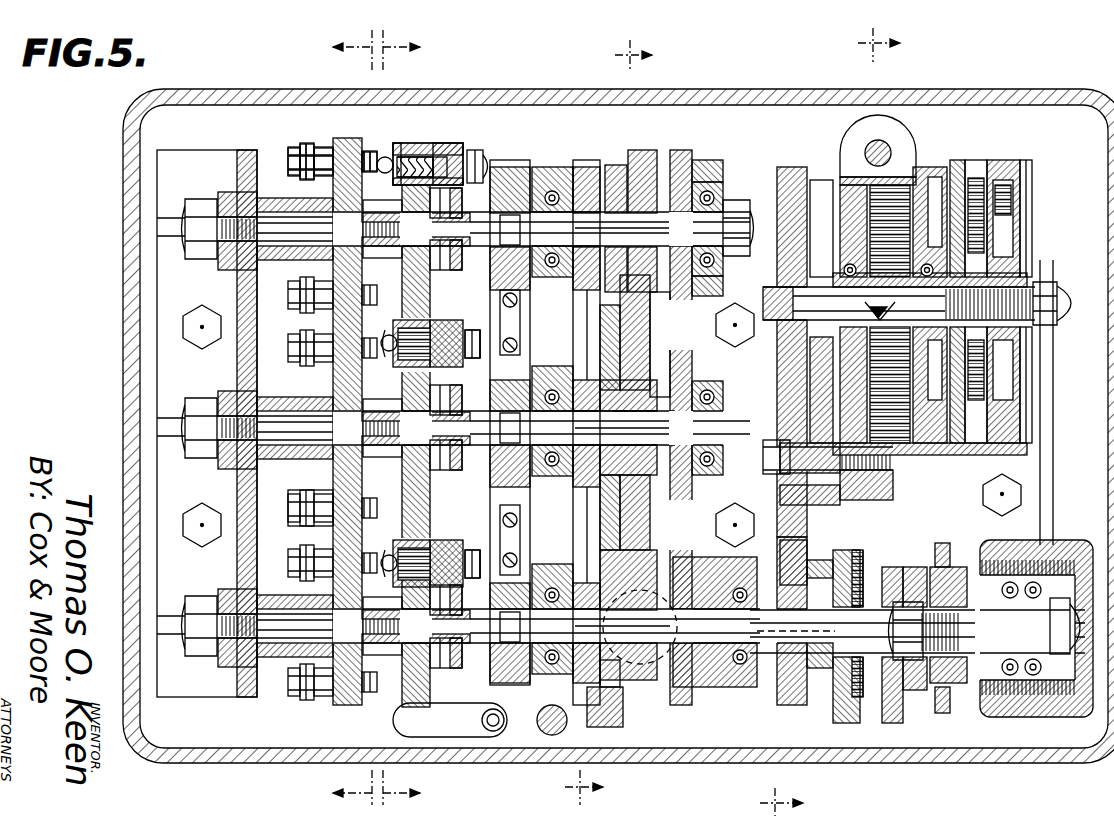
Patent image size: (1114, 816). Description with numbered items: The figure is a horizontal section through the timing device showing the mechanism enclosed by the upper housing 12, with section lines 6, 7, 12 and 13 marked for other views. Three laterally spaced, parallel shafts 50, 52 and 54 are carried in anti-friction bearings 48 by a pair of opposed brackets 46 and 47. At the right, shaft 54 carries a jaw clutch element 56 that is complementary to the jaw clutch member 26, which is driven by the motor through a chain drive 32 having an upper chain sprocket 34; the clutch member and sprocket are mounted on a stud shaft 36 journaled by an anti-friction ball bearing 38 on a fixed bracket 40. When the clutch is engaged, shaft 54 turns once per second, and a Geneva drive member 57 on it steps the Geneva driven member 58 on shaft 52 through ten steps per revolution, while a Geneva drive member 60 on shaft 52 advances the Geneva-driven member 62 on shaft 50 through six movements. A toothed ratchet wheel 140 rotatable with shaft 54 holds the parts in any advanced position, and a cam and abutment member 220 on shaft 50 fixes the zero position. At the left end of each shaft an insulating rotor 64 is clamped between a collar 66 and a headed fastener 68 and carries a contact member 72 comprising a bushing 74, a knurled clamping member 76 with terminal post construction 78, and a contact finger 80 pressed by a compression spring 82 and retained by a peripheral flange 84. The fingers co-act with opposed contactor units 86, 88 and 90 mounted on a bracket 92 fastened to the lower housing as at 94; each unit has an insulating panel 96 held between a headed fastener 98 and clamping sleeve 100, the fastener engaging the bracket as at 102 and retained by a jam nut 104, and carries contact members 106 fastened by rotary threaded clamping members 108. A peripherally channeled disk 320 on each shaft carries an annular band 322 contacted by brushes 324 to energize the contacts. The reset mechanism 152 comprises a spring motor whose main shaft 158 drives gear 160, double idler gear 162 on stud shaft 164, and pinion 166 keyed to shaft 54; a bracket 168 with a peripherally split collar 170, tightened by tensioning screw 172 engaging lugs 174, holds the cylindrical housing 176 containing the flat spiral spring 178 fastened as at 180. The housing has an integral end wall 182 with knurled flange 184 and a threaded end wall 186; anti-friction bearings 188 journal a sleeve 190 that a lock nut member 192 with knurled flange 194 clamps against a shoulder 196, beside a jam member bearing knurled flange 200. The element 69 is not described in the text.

The section line 6- 6 is at (603, 428).
The section line 7- 7 is at (819, 422).
The upper housing 12 is at (401, 423).
The section line 13- 13 is at (352, 423).
The jaw clutch member 26 is at (897, 525).
The chain drive 32 is at (870, 560).
The upper chain sprocket 34 is at (915, 585).
The stud shaft 36 is at (955, 690).
The anti-friction ball bearing 38 is at (1045, 540).
The bracket 40 is at (1052, 452).
The bracket 46 is at (700, 160).
The bracket 47 is at (585, 160).
The anti-friction bearings 48 is at (710, 182).
The shaft 50 is at (628, 212).
The shaft 52 is at (655, 425).
The shaft 54 is at (686, 688).
The jaw clutch element 56 is at (843, 728).
The Geneva drive member 57 is at (595, 720).
The Geneva driven member 58 is at (615, 505).
The Geneva drive member 60 is at (650, 552).
The Geneva-driven member 62 is at (645, 152).
The insulating rotor 64 is at (430, 690).
The collar 66 is at (455, 255).
The headed fastener 68 is at (360, 250).
The shaft shoulder 69 is at (375, 262).
The contact member 72 is at (470, 143).
The bushing 74 is at (410, 145).
The knurled clamping member 76 is at (470, 148).
The terminal post construction 78 is at (482, 148).
The contact finger 80 is at (386, 157).
The compression spring 82 is at (396, 145).
The peripheral flange 84 is at (440, 142).
The contactor unit 86 is at (330, 706).
The contactor unit 88 is at (325, 378).
The contactor unit 90 is at (302, 258).
The bracket 92 is at (172, 168).
The fastening 94 is at (195, 325).
The insulating panel 96 is at (290, 595).
The headed fastener 98 is at (316, 432).
The clamping sleeve 100 is at (275, 462).
The threaded engagement 102 is at (230, 418).
The jam nut 104 is at (198, 598).
The contact members 106 is at (300, 516).
The rotary threaded clamping members 108 is at (295, 150).
The toothed ratchet wheel 140 is at (645, 680).
The reset mechanism 152 is at (1017, 163).
The main shaft 158 is at (985, 273).
The gear 160 is at (790, 205).
The double idler gear 162 is at (805, 523).
The stud shaft 164 is at (768, 458).
The pinion 166 is at (795, 670).
The bracket 168 is at (905, 490).
The peripherally split collar 170 is at (895, 452).
The tensioning screw 172 is at (870, 143).
The lugs 174 is at (878, 128).
The cylindrical housing 176 is at (845, 178).
The flat spiral spring 178 is at (915, 178).
The fastening 180 is at (890, 178).
The end wall 182 is at (935, 167).
The knurled flange 184 is at (940, 167).
The end wall 186 is at (820, 190).
The anti-friction bearings 188 is at (790, 290).
The sleeve 190 is at (985, 318).
The lock nut member 192 is at (1005, 74).
The knurled flange 194 is at (1000, 160).
The shoulder 196 is at (785, 300).
The knurled flange 200 is at (1032, 163).
The cam and abutment member 220 is at (616, 165).
The peripherally channeled disk 320 is at (520, 160).
The annular band 322 is at (512, 160).
The brushes 324 is at (505, 297).